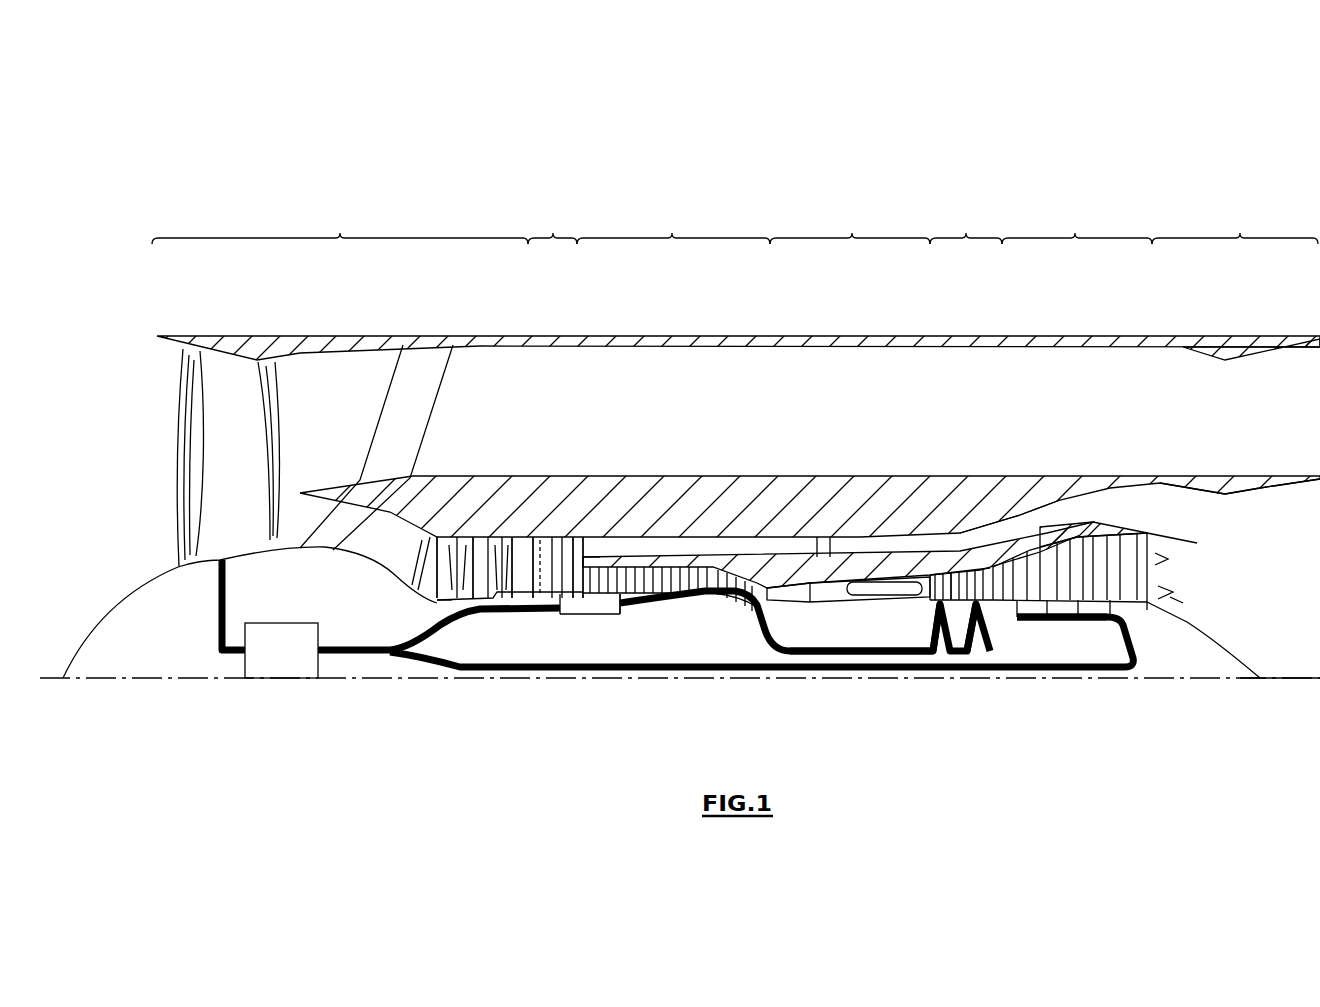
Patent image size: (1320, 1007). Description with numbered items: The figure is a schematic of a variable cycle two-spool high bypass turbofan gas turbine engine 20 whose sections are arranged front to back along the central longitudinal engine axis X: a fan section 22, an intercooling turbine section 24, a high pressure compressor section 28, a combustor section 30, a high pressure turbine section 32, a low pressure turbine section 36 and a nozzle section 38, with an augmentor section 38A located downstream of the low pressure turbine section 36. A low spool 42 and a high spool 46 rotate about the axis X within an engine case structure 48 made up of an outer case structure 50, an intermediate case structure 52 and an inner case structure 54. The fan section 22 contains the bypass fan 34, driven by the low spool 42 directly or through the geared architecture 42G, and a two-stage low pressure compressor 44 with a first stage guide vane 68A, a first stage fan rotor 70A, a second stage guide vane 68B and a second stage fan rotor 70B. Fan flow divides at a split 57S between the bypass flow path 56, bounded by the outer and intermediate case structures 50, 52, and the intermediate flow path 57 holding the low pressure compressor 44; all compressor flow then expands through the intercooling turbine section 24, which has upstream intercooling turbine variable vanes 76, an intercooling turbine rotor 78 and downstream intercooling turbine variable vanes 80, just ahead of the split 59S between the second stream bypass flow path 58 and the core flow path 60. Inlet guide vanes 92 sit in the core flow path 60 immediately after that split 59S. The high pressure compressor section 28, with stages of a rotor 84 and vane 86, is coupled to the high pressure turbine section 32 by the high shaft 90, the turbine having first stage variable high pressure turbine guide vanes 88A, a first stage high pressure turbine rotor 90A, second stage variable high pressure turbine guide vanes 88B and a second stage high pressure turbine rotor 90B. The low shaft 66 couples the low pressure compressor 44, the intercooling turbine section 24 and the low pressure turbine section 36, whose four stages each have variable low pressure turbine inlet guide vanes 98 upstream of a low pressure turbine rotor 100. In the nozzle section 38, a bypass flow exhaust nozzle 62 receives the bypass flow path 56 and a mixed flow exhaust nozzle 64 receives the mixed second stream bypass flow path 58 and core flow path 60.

The gas turbine engine 20 is at (1193, 182).
The fan section 22 is at (340, 223).
The intercooling turbine section 24 is at (552, 223).
The high pressure compressor section 28 is at (673, 223).
The combustor section 30 is at (850, 223).
The high pressure turbine section 32 is at (966, 223).
The low pressure turbine section 36 is at (1077, 223).
The nozzle section 38 is at (1235, 223).
The bypass fan 34 is at (212, 483).
The low spool 42 is at (460, 667).
The geared architecture 42G is at (262, 663).
The low pressure compressor 44 is at (440, 458).
The high spool 46 is at (750, 624).
The engine case structure 48 is at (1018, 322).
The outer case structure 50 is at (945, 335).
The intermediate case structure 52 is at (1015, 480).
The inner case structure 54 is at (1065, 535).
The bypass flow path 56 is at (937, 429).
The intermediate flow path 57 is at (400, 563).
The split 57S is at (306, 492).
The second stream bypass flow path 58 is at (1008, 530).
The split 59S is at (682, 490).
The core flow path 60 is at (727, 557).
The bypass flow exhaust nozzle 62 is at (1228, 346).
The mixed flow exhaust nozzle 64 is at (1225, 482).
The low shaft 66 is at (724, 668).
The first stage guide vane 68A is at (423, 583).
The second stage guide vane 68B is at (485, 600).
The first stage fan rotor 70A is at (440, 613).
The second stage fan rotor 70B is at (514, 600).
The upstream intercooling turbine variable vanes 76 is at (540, 548).
The intercooling turbine rotor 78 is at (577, 540).
The downstream intercooling turbine variable vanes 80 is at (577, 548).
The rotor 84 is at (625, 600).
The vane 86 is at (603, 600).
The first stage variable high pressure turbine guide vanes 88A is at (922, 592).
The second stage variable high pressure turbine guide vanes 88B is at (955, 602).
The high shaft 90 is at (823, 650).
The first stage high pressure turbine rotor 90A is at (937, 602).
The second stage high pressure turbine rotor 90B is at (1010, 602).
The inlet guide vanes 92 is at (592, 557).
The variable low pressure turbine inlet guide vanes 98 is at (1015, 605).
The low pressure turbine rotor 100 is at (1072, 602).
The augmentor section 38A is at (1192, 600).
The central longitudinal engine axis X is at (1278, 680).